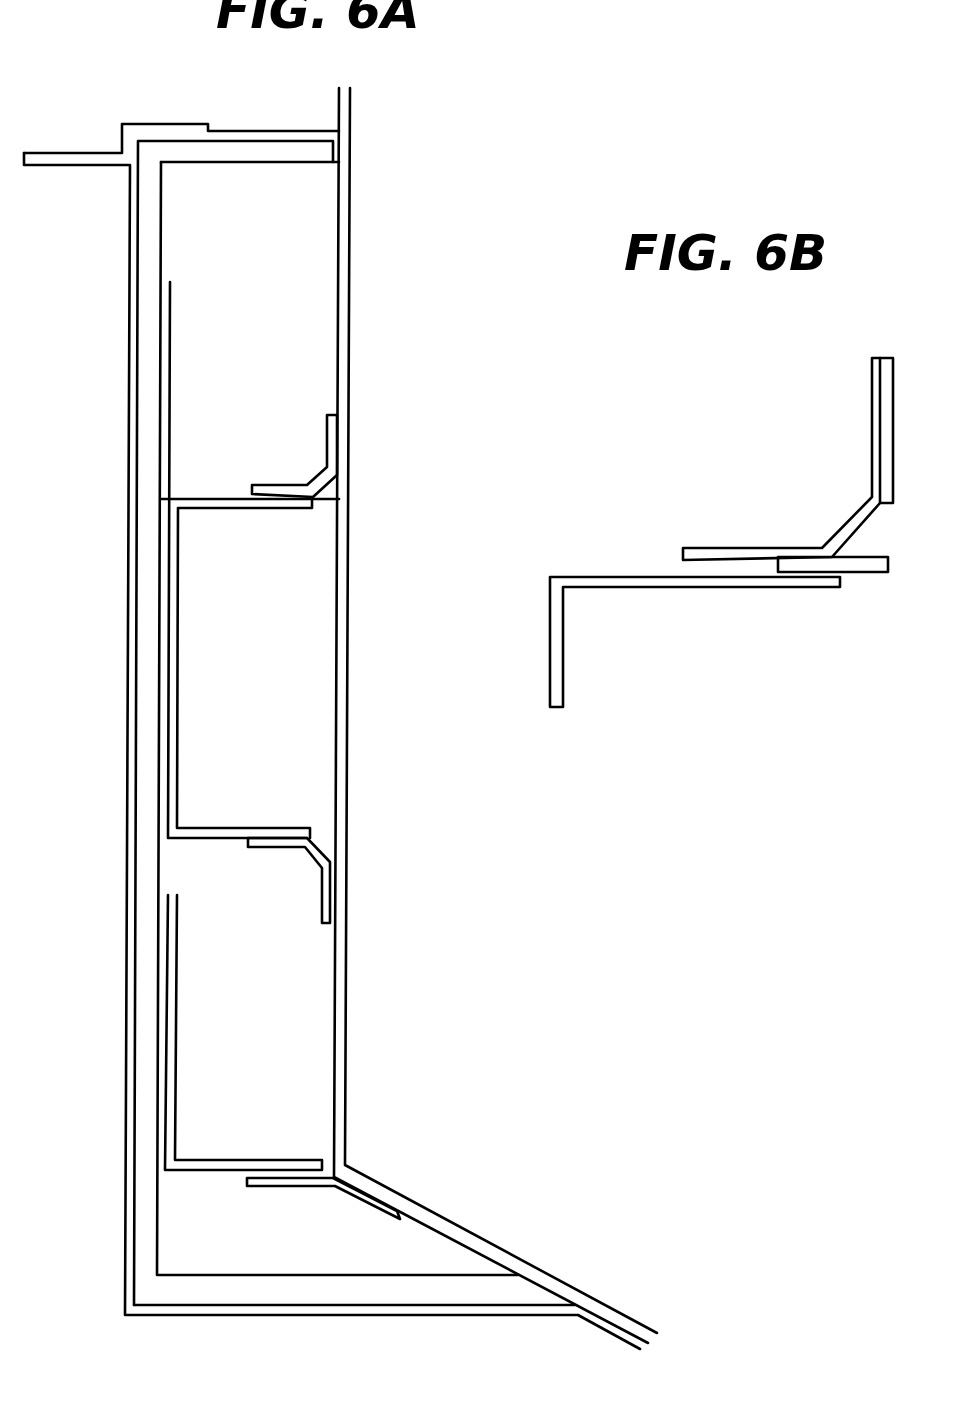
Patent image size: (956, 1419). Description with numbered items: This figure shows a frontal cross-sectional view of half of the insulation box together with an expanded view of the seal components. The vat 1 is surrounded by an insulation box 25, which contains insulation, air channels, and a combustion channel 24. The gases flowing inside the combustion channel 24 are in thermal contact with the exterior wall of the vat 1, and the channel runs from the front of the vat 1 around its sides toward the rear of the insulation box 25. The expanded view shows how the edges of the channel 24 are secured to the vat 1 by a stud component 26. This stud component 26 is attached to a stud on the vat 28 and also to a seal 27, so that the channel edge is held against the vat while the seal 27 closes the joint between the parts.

In FIG. 6A, the vat 1 is at (528, 1265).
In FIG. 6A, the combustion channel 24 is at (198, 498).
In FIG. 6A, the insulation box 25 is at (125, 777).
In FIG. 6B, the stud component 26 is at (697, 547).
In FIG. 6B, the seal 27 is at (858, 577).
In FIG. 6A, the stud on the vat 28 is at (350, 378).
In FIG. 6B, the stud on the vat 28 is at (888, 353).